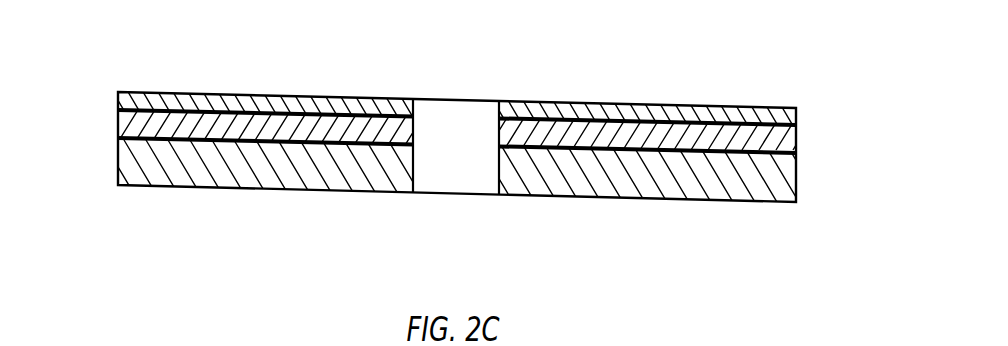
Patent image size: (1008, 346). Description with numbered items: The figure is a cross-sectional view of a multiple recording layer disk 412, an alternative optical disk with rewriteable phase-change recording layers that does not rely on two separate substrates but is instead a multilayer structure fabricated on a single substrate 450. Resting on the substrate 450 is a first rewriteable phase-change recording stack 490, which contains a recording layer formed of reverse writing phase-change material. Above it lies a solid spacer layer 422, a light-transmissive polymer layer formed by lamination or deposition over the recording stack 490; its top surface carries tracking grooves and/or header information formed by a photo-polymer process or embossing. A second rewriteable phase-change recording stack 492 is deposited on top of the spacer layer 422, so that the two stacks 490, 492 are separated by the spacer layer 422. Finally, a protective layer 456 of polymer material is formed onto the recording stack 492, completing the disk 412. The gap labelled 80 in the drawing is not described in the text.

The multilayer substrate structure 412 is at (327, 222).
The top dielectric layer 456 is at (133, 100).
The intermediate dielectric layer 422 is at (207, 123).
The bottom dielectric layer 450 is at (130, 165).
The upper conductive layer 492 is at (759, 124).
The lower conductive layer 490 is at (748, 157).
The opening 80 is at (450, 181).